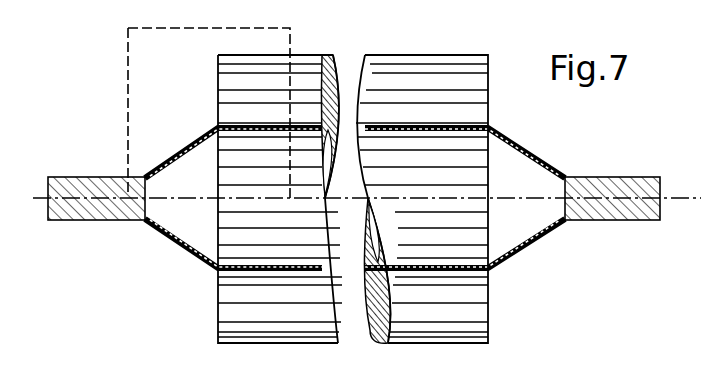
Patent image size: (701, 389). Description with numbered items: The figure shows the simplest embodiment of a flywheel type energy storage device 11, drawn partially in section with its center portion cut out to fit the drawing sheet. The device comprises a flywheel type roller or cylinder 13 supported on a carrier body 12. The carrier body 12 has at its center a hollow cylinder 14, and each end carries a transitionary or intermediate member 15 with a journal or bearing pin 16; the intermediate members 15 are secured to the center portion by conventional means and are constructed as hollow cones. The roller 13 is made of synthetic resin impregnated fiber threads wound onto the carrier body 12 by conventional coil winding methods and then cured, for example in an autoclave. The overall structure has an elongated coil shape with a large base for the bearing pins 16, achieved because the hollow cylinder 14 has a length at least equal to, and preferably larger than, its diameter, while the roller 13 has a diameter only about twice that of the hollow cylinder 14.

The storage device 11 is at (325, 222).
The carrier body 12 is at (233, 273).
The flywheel type roller 13 is at (266, 322).
The hollow cylinder 14 is at (443, 136).
The intermediate member 15 is at (178, 245).
The bearing pin 16 is at (85, 190).